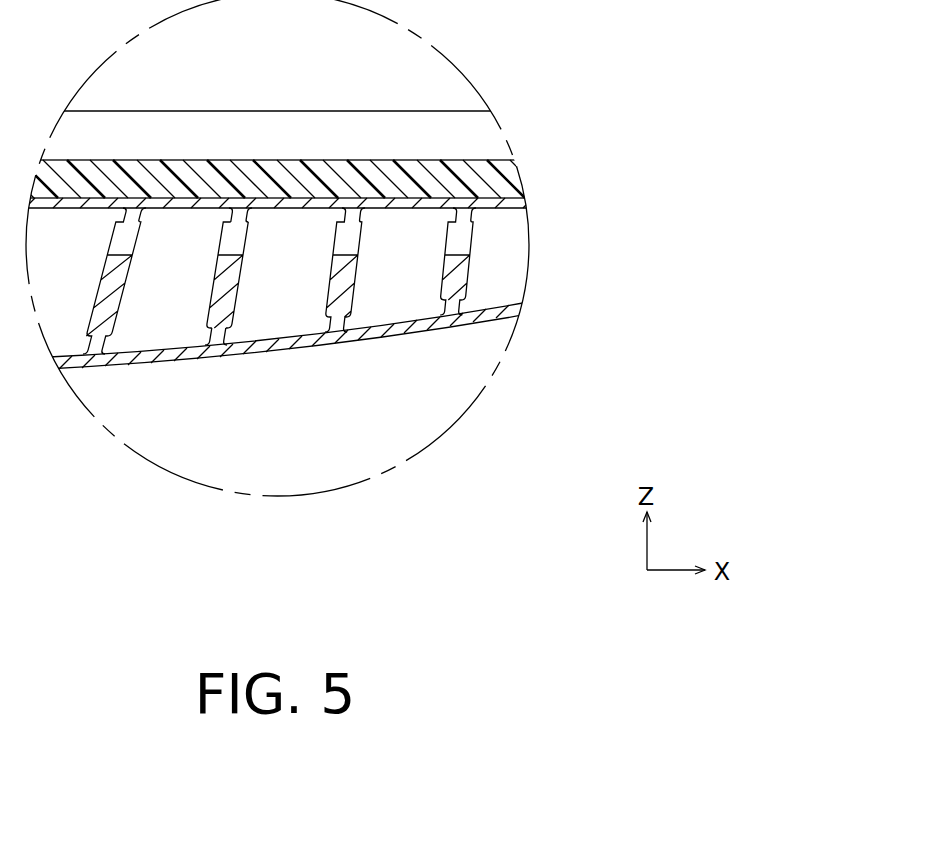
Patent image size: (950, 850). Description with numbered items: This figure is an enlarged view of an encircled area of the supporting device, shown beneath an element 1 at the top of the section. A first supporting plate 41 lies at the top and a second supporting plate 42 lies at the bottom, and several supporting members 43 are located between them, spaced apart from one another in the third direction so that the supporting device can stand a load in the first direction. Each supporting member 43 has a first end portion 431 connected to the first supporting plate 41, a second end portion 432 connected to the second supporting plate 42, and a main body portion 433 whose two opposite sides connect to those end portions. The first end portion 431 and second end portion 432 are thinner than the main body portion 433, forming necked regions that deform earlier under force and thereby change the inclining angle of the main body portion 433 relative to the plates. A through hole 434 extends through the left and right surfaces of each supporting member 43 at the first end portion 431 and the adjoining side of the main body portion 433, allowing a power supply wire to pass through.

The display panel 1 is at (512, 177).
The first supporting plate 41 is at (518, 203).
The second supporting plate 42 is at (493, 320).
The supporting member 43 is at (279, 269).
The first end portion 431 is at (239, 218).
The second end portion 432 is at (213, 342).
The main body portion 433 is at (230, 290).
The through hole 434 is at (226, 240).